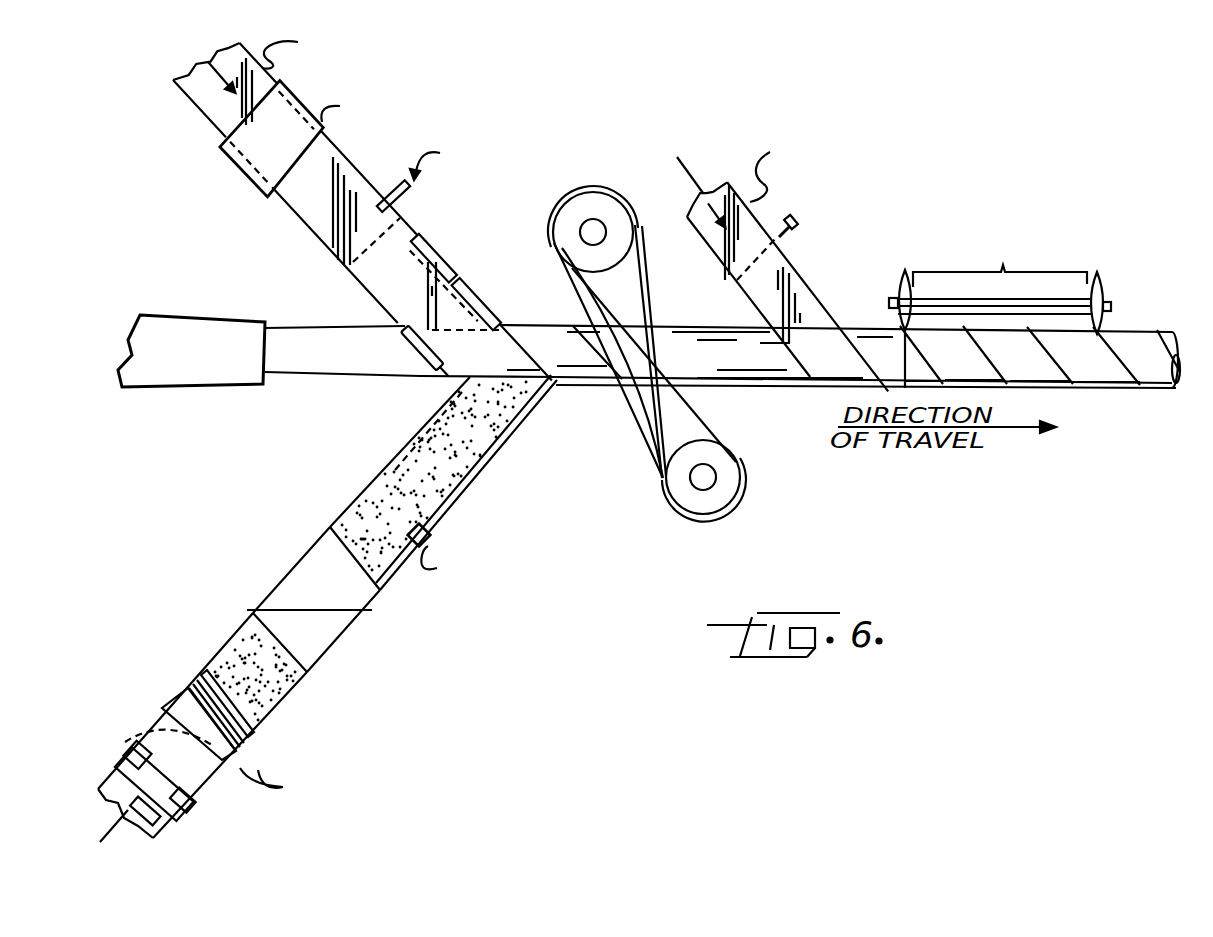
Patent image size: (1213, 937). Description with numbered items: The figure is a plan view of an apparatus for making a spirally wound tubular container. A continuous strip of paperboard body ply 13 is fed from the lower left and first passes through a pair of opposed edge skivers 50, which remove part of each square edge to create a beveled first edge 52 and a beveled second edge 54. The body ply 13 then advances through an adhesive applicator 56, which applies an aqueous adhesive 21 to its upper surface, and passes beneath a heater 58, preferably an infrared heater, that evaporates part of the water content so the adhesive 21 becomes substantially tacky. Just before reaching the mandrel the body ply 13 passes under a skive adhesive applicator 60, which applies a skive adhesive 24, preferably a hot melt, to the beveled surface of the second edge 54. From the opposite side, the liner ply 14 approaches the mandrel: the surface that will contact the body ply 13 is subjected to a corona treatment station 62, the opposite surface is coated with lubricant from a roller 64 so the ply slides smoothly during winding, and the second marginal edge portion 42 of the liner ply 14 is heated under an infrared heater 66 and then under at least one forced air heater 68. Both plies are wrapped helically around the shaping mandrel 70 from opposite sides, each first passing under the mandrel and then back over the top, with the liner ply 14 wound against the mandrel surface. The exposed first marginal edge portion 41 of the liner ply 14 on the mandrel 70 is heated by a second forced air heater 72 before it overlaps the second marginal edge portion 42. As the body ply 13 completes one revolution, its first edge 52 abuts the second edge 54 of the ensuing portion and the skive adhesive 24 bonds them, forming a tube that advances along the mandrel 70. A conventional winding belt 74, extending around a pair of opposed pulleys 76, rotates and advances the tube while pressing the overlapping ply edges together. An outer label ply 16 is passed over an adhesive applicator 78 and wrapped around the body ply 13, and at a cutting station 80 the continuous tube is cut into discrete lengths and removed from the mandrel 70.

The liner ply 14 is at (244, 45).
The corona treatment station 62 is at (238, 167).
The first marginal edge portion 41 is at (357, 282).
The roller 64 is at (392, 186).
The second marginal edge portion 42 is at (410, 223).
The infrared heater 66 is at (441, 257).
The forced air heater 68 is at (483, 300).
The shaping mandrel 70 is at (322, 375).
The second forced air heater 72 is at (418, 362).
The skive adhesive 24 is at (510, 452).
The skive adhesive applicator 60 is at (430, 534).
The heater 58 is at (312, 548).
The adhesive 21 is at (246, 648).
The paperboard body ply 13 is at (172, 830).
The adhesive applicator 56 is at (252, 748).
The first edge 52 is at (172, 712).
The edge skivers 50 is at (130, 748).
The second edge 54 is at (238, 785).
The outer label ply 16 is at (760, 213).
The adhesive applicator 78 is at (789, 230).
The pulleys 76 is at (581, 238).
The winding belt 74 is at (722, 428).
The cutting station 80 is at (1106, 300).